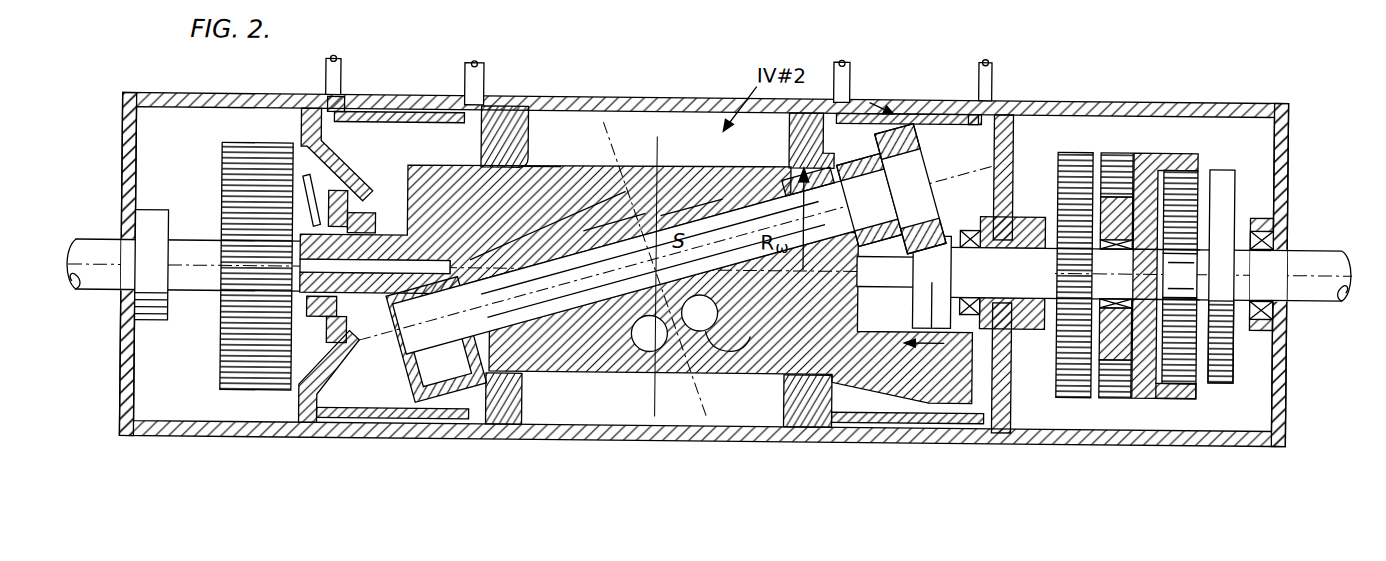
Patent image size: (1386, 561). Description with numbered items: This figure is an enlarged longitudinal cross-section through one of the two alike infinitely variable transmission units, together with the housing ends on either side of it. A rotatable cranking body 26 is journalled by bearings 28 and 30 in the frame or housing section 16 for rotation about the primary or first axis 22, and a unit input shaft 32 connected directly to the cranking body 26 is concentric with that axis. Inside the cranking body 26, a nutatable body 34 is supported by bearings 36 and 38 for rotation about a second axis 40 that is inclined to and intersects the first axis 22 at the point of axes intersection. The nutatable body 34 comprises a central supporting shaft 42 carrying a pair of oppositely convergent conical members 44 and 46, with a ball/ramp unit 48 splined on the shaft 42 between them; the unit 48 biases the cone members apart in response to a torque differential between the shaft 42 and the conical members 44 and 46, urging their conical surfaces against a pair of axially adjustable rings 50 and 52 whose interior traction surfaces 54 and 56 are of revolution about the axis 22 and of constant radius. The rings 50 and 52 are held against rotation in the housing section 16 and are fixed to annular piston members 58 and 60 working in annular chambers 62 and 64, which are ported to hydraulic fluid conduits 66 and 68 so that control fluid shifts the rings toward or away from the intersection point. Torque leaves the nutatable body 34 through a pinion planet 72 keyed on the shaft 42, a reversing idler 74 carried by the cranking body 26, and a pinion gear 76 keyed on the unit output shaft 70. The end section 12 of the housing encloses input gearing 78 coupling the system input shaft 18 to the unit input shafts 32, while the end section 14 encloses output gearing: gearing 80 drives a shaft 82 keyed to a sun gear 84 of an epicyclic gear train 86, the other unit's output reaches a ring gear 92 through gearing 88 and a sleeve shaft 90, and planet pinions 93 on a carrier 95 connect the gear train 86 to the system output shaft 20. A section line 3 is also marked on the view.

The section line 3 is at (907, 225).
The end section of the housing 12 is at (180, 98).
The end section of the housing 14 is at (1155, 98).
The frame or housing section 16 is at (633, 98).
The system input shaft 18 is at (100, 245).
The system output shaft 20 is at (1325, 244).
The primary or first axis 22 is at (729, 272).
The rotatable cranking body 26 is at (437, 148).
The bearing 28 is at (368, 214).
The bearing 30 is at (1011, 355).
The unit input shaft 32 is at (316, 300).
The nutatable body 34 is at (576, 229).
The bearing 36 is at (426, 388).
The bearing 38 is at (790, 153).
The second axis 40 is at (758, 224).
The central supporting shaft 42 is at (547, 327).
The conical member 44 is at (548, 229).
The conical member 46 is at (692, 201).
The ball/ramp unit 48 is at (633, 197).
The axially adjustable ring 50 is at (523, 108).
The axially adjustable ring 52 is at (788, 127).
The interior traction surface 54 is at (536, 168).
The interior traction surface 56 is at (784, 372).
The annular piston member 58 is at (346, 102).
The annular piston member 60 is at (968, 112).
The annular chamber 62 is at (398, 115).
The annular chamber 64 is at (925, 112).
The hydraulic fluid conduit 66 is at (340, 74).
The hydraulic fluid conduit 68 is at (484, 75).
The unit output shaft 70 is at (1053, 274).
The pinion planet 72 is at (975, 134).
The reversing idler 74 is at (992, 162).
The pinion gear 76 is at (921, 291).
The input gearing 78 is at (205, 167).
The gearing 80 is at (1072, 148).
The shaft 82 is at (1150, 274).
The sun gear 84 is at (1222, 186).
The epicyclic gear train 86 is at (1177, 407).
The gearing 88 is at (1112, 149).
The sleeve shaft 90 is at (1120, 213).
The ring gear 92 is at (1170, 160).
The planet pinions 93 is at (1190, 200).
The carrier 95 is at (1262, 190).